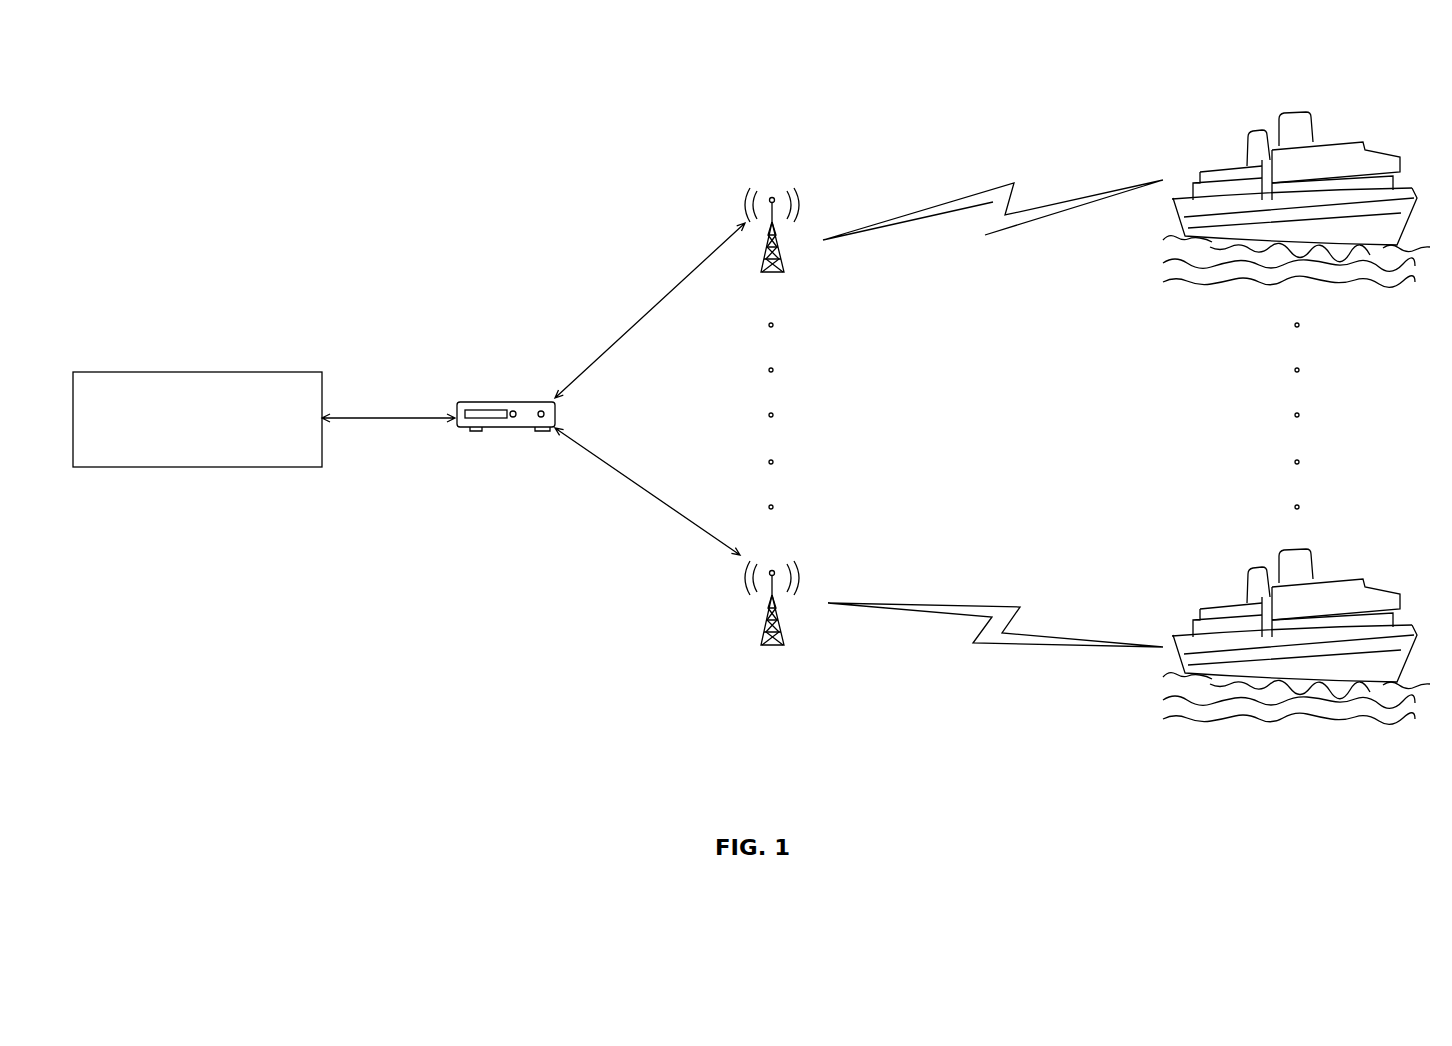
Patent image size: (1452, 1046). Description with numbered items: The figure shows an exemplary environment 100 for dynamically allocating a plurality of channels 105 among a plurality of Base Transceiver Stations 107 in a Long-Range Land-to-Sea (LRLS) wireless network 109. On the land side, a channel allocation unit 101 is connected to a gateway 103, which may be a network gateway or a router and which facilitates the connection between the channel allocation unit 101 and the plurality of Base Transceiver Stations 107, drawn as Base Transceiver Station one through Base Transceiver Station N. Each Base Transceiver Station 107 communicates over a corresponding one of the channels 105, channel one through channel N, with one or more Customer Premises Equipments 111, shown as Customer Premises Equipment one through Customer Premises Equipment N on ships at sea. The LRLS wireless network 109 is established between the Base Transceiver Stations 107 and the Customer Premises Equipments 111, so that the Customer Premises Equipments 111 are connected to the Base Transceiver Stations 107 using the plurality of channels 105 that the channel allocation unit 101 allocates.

The environment 100 is at (297, 128).
The channel allocation unit 101 is at (197, 419).
The gateway 103 is at (506, 455).
The plurality of channels 105 is at (993, 421).
The Base Transceiver Stations 107 is at (675, 431).
The LRLS wireless network 109 is at (993, 202).
The Customer Premises Equipments 111 is at (1296, 421).